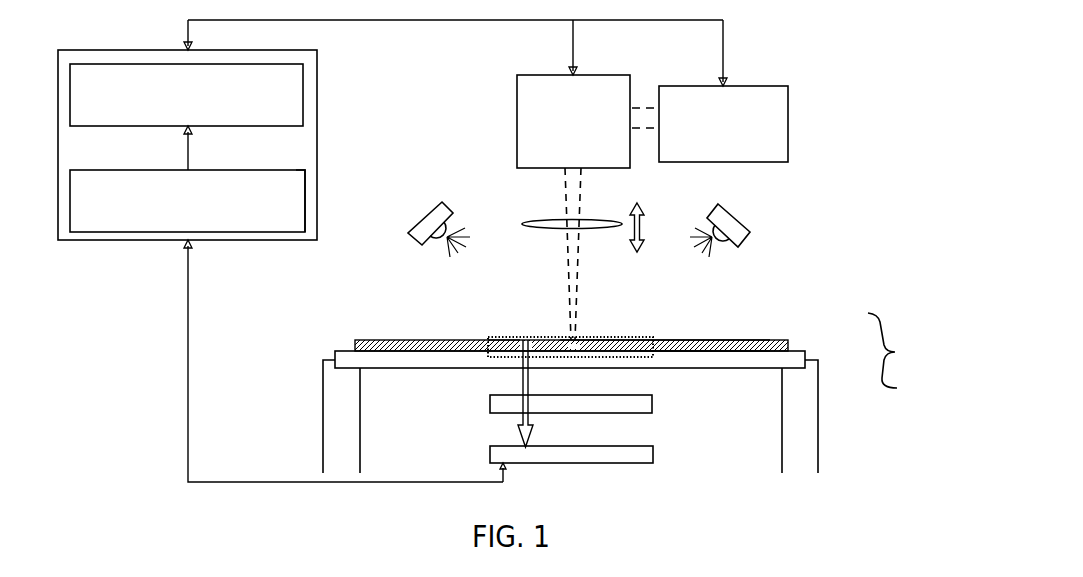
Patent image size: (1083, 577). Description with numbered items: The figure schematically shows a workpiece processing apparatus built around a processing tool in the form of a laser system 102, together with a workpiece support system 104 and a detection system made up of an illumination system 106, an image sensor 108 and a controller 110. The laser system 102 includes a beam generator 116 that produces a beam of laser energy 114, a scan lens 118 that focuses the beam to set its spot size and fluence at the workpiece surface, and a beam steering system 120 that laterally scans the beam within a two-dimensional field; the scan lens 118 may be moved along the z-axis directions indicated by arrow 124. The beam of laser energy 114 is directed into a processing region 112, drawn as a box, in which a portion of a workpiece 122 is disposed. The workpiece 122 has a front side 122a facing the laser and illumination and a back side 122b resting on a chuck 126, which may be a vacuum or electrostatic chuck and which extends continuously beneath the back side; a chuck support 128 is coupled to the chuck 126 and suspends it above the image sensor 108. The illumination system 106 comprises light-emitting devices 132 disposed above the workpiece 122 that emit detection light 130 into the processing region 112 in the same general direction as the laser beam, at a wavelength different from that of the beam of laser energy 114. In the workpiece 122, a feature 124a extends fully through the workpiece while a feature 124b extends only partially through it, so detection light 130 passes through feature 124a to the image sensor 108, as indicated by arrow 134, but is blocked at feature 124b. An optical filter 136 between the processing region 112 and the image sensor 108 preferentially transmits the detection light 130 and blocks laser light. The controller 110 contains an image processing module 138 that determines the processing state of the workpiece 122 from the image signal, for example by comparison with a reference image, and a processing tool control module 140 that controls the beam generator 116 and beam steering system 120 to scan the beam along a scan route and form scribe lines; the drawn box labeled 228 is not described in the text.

The laser system 102 is at (464, 101).
The workpiece support system 104 is at (901, 350).
The illumination system 106 is at (419, 189).
The image sensor 108 is at (653, 448).
The controller 110 is at (153, 50).
The processing region 112 is at (622, 332).
The beam of laser energy 114 is at (578, 338).
The beam generator 116 is at (783, 85).
The scan lens 118 is at (545, 222).
The beam steering system 120 is at (530, 74).
The workpiece 122 is at (778, 341).
The front side of workpiece 122a is at (701, 333).
The back side of workpiece 122b is at (705, 353).
The arrow 124 is at (641, 206).
The feature extending fully through the workpiece 124a is at (518, 340).
The feature extending partially through the workpiece 124b is at (567, 336).
The chuck 126 is at (805, 353).
The chuck support 128 is at (820, 388).
The detection light 130 is at (715, 250).
The light-emitting device 132 is at (751, 228).
The arrow 134 is at (520, 390).
The optical filter 136 is at (652, 397).
The image processing module 138 is at (146, 232).
The processing tool control module 140 is at (84, 64).
The module connection 228 is at (296, 170).